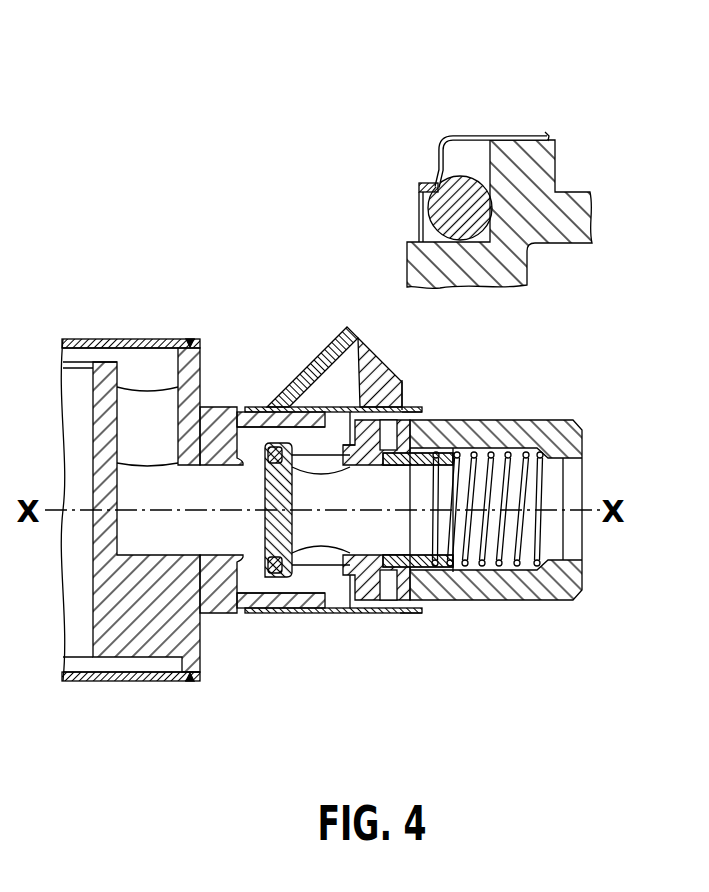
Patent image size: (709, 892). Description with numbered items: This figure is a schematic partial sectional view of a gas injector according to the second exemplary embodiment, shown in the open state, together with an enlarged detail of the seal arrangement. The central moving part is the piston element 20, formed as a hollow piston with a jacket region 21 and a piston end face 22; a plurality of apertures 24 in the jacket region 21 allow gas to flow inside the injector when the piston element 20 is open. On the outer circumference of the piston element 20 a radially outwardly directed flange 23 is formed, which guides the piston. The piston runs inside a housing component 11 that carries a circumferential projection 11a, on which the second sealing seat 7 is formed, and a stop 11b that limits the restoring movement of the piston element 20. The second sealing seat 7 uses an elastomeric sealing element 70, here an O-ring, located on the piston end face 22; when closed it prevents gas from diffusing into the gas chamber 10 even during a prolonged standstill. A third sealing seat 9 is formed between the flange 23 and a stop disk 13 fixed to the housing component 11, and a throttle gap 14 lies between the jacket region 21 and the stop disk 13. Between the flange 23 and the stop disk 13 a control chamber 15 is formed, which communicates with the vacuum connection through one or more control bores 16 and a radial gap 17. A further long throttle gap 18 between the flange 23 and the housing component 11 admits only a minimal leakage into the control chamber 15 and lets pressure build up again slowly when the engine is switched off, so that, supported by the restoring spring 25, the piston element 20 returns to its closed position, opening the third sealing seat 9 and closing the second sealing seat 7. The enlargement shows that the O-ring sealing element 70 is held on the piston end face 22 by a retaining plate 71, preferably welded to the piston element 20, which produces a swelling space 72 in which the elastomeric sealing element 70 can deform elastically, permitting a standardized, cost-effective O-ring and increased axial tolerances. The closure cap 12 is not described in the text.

The second sealing seat 7 is at (228, 562).
The third sealing seat 9 is at (330, 572).
The gas chamber 10 is at (147, 408).
The housing component 11 is at (220, 430).
The circumferential projection 11a is at (256, 404).
The stop 11b is at (300, 405).
The closure cap 12 is at (550, 430).
The stop disk 13 is at (415, 440).
The throttle gap 14 is at (388, 612).
The control chamber 15 is at (368, 580).
The control bore 16 is at (403, 404).
The radial gap 17 is at (419, 406).
The throttle gap 18 is at (359, 404).
The piston element 20 is at (280, 420).
The jacket region 21 is at (418, 613).
The piston end face 22 is at (263, 530).
The radially outwardly directed flange 23 is at (345, 578).
The apertures 24 is at (301, 566).
The restoring spring 25 is at (508, 451).
The elastomeric sealing element 70 is at (278, 574).
The retaining plate 71 is at (449, 136).
The swelling space 72 is at (474, 152).